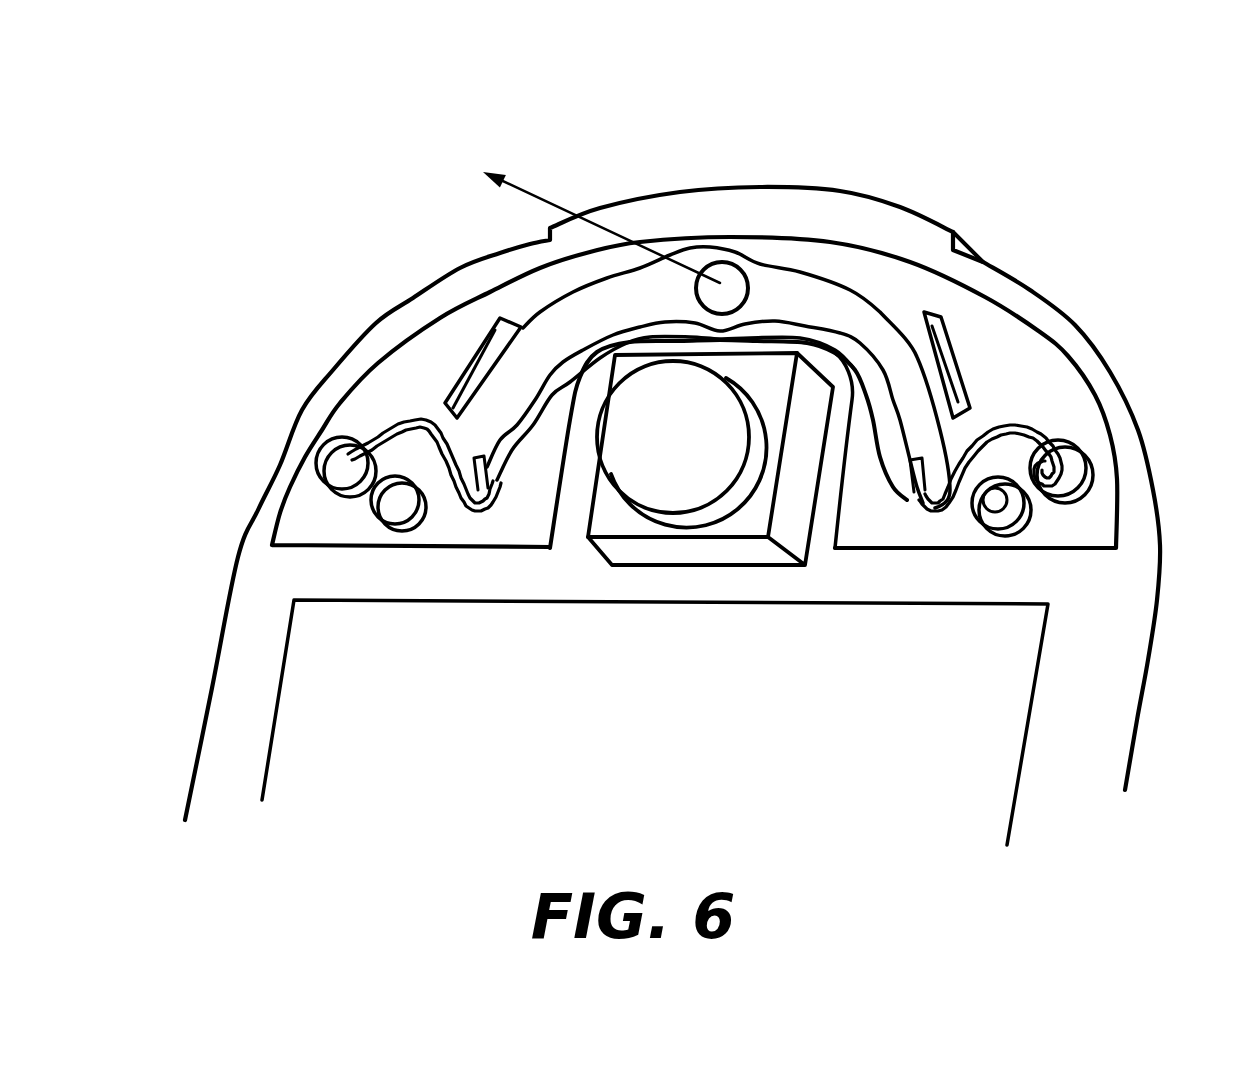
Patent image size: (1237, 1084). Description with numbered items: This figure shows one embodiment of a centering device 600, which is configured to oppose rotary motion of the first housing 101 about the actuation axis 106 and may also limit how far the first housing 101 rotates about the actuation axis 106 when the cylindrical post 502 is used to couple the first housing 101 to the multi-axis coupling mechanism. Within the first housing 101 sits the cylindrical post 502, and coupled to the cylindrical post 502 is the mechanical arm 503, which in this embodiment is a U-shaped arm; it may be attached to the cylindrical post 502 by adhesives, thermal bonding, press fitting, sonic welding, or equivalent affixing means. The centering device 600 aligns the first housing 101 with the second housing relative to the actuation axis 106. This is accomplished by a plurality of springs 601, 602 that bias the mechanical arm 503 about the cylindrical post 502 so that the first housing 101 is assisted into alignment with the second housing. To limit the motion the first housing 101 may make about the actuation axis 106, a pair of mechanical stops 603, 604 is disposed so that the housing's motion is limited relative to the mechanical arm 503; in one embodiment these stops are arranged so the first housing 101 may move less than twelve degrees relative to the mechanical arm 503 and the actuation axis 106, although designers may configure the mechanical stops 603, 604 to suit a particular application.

The first housing 101 is at (300, 513).
The actuation axis 106 is at (553, 252).
The cylindrical post 502 is at (725, 286).
The mechanical arm 503 is at (883, 337).
The centering device 600 is at (917, 190).
The spring 601 is at (393, 423).
The spring 602 is at (1022, 423).
The mechanical stop 603 is at (493, 343).
The mechanical stop 604 is at (950, 335).